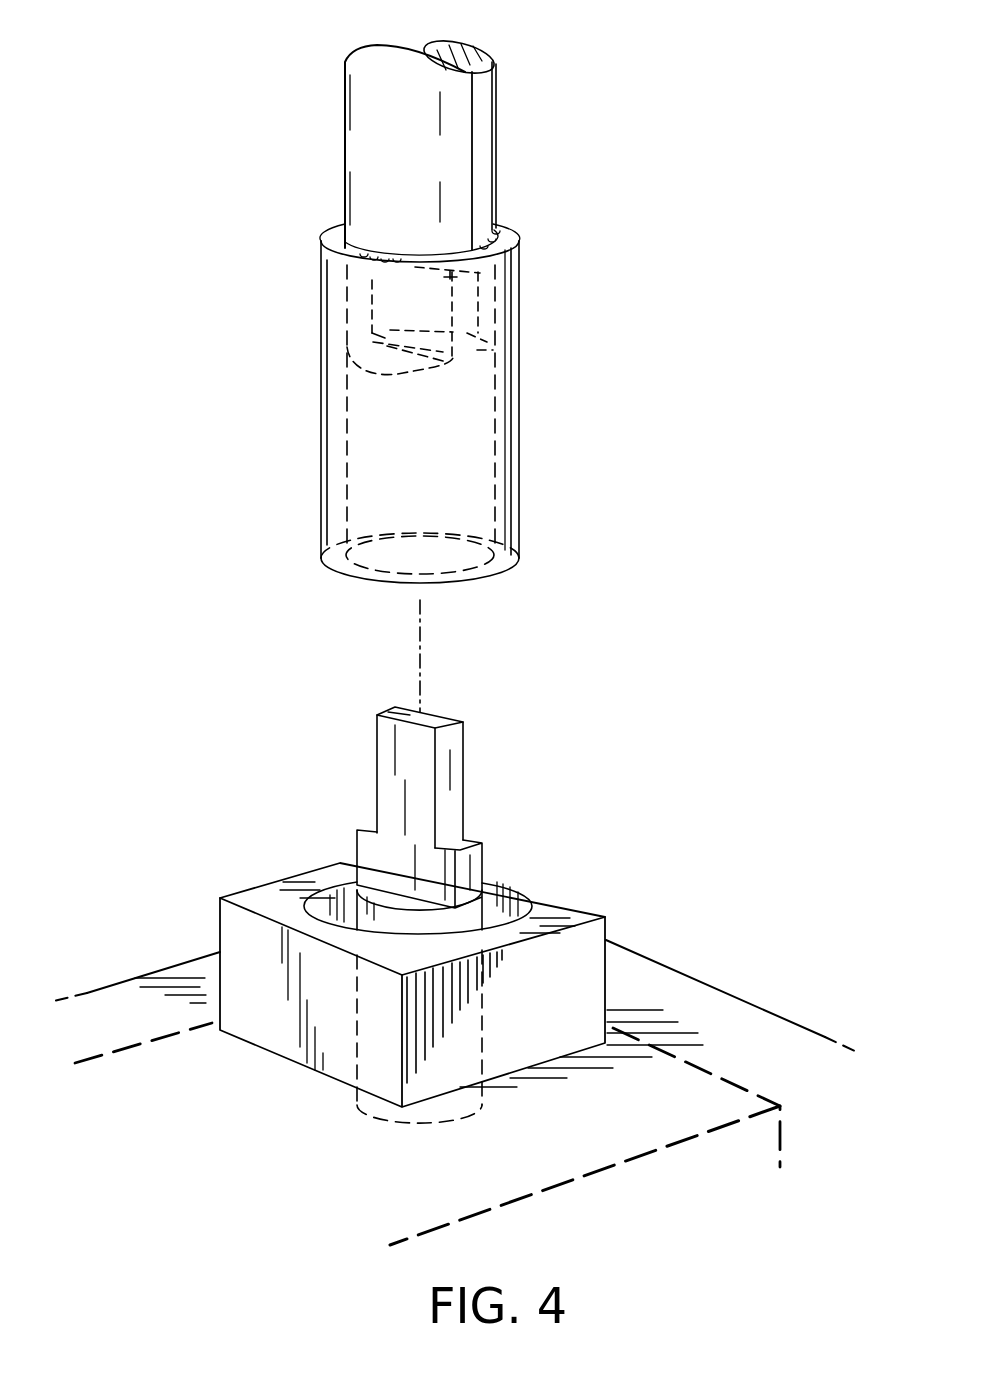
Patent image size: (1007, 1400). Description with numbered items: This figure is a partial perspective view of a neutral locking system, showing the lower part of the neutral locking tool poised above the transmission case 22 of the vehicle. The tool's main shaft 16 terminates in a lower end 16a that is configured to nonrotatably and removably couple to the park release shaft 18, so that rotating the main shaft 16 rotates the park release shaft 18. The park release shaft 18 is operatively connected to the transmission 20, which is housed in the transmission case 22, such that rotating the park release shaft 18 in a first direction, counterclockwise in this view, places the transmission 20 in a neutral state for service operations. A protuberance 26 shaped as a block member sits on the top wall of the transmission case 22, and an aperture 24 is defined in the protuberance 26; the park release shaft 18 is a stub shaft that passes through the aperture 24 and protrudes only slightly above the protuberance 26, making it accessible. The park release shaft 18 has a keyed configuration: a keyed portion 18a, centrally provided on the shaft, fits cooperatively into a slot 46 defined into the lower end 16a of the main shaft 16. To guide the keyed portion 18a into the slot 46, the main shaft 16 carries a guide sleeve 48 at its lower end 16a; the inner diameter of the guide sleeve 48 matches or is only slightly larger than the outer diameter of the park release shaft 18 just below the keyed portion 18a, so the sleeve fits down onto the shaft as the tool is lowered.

The main shaft 16 is at (482, 116).
The lower end 16a is at (492, 298).
The park release shaft 18 is at (377, 918).
The keyed portion 18a is at (383, 745).
The transmission 20 is at (713, 1086).
The transmission case 22 is at (177, 972).
The aperture 24 is at (502, 898).
The protuberance 26 is at (597, 975).
The slot 46 is at (470, 354).
The guide sleeve 48 is at (333, 395).